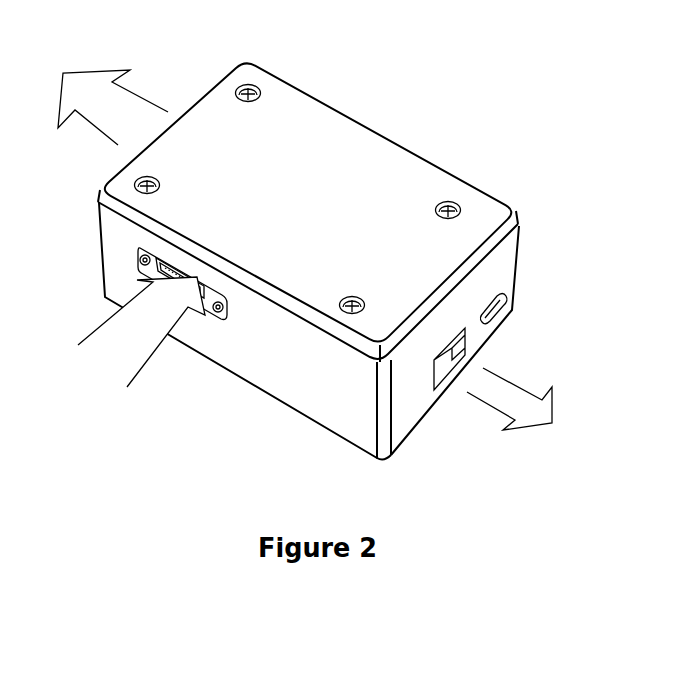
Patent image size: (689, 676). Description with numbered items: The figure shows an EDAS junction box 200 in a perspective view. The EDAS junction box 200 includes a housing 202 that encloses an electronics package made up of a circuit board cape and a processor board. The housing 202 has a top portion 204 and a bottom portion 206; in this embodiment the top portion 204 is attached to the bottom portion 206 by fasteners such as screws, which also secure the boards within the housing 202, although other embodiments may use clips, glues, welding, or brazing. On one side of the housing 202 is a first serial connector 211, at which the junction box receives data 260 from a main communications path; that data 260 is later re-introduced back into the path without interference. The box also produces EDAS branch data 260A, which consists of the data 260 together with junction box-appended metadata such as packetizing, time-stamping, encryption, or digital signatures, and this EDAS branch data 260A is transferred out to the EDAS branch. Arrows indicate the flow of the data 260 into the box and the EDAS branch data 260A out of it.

The EDAS junction box 200 is at (428, 72).
The housing 202 is at (432, 158).
The top portion 204 is at (488, 188).
The bottom portion 206 is at (280, 402).
The first serial connector 211 is at (140, 284).
The data 260 is at (117, 108).
The EDAS branch data 260A is at (517, 385).